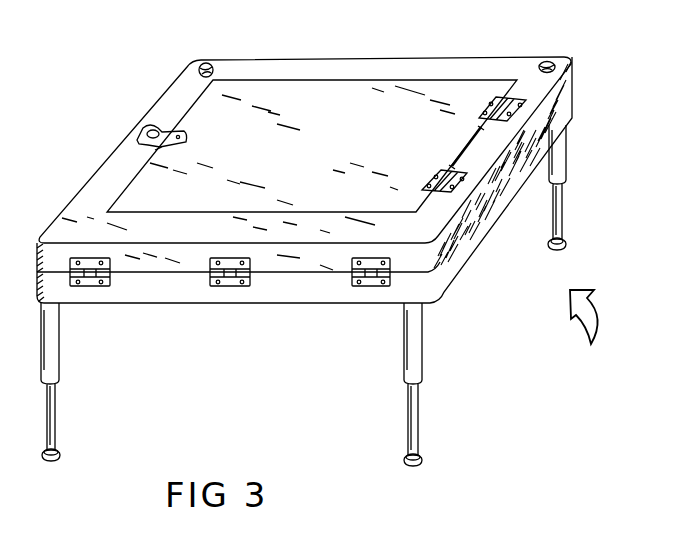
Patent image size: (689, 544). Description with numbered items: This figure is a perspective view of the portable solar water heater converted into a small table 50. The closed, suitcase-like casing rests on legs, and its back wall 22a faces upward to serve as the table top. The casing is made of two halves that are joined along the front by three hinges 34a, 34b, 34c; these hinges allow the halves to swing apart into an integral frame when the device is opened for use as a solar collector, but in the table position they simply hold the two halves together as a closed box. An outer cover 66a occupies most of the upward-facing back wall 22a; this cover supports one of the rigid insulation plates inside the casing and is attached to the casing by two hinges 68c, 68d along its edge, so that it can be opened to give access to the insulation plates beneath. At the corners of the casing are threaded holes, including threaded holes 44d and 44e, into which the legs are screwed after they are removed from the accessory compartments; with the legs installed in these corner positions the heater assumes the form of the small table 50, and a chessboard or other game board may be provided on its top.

The back wall 22a is at (177, 97).
The threaded hole 44d is at (212, 63).
The threaded hole 44e is at (554, 69).
The outer cover 66a is at (333, 96).
The hinge 68c is at (488, 106).
The hinge 68d is at (460, 192).
The hinge 34a is at (97, 283).
The hinge 34b is at (230, 278).
The hinge 34c is at (371, 281).
The small table 50 is at (589, 332).